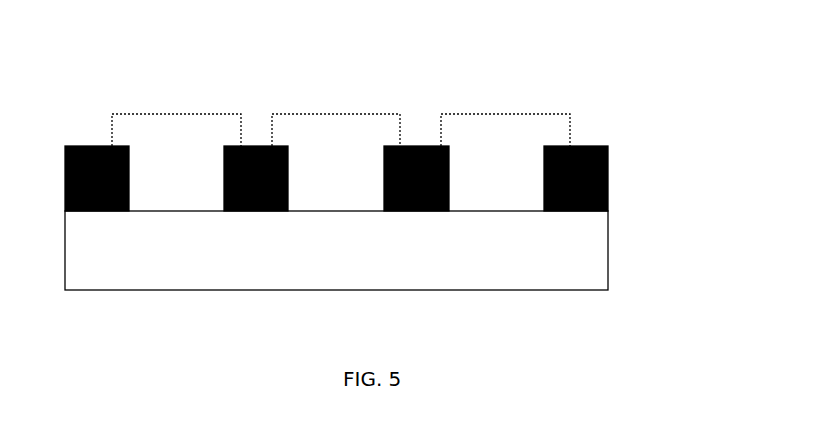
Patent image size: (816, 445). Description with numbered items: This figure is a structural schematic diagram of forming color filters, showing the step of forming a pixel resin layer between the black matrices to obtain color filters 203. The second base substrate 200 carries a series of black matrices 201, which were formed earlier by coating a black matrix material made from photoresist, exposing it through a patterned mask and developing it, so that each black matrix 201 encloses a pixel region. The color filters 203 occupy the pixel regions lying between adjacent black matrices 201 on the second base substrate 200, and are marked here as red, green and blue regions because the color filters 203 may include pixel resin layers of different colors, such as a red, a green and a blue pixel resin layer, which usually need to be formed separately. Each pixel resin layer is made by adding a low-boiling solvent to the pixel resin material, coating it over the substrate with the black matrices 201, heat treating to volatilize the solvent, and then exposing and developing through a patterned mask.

The second base substrate 200 is at (590, 240).
The black matrix 201 is at (607, 175).
The color filter 203 is at (495, 193).